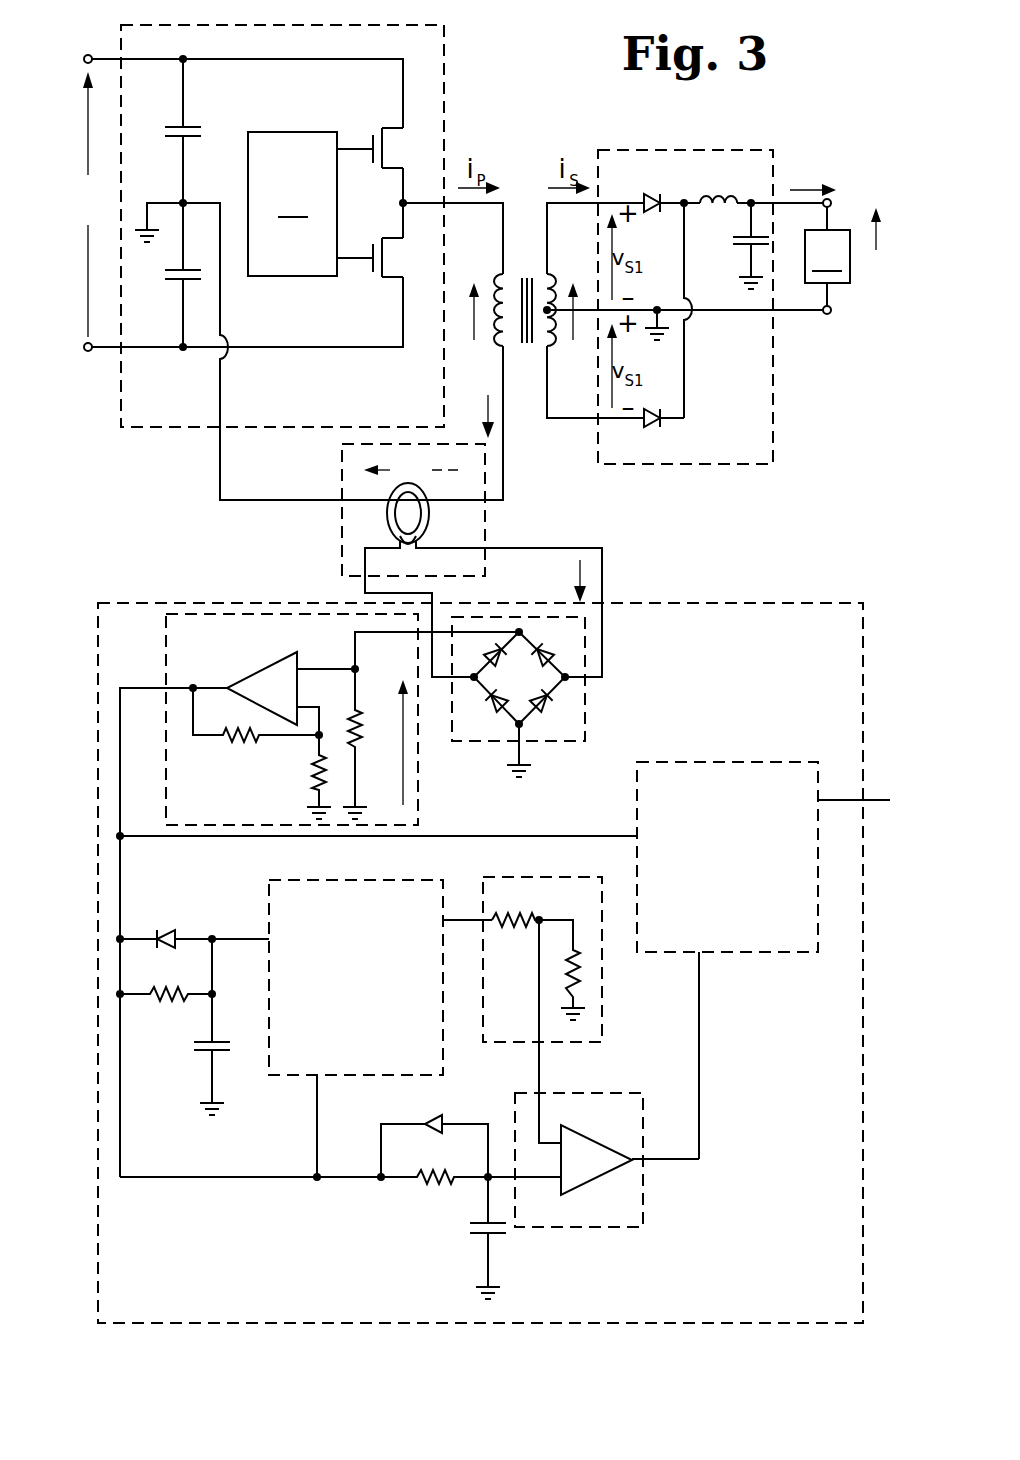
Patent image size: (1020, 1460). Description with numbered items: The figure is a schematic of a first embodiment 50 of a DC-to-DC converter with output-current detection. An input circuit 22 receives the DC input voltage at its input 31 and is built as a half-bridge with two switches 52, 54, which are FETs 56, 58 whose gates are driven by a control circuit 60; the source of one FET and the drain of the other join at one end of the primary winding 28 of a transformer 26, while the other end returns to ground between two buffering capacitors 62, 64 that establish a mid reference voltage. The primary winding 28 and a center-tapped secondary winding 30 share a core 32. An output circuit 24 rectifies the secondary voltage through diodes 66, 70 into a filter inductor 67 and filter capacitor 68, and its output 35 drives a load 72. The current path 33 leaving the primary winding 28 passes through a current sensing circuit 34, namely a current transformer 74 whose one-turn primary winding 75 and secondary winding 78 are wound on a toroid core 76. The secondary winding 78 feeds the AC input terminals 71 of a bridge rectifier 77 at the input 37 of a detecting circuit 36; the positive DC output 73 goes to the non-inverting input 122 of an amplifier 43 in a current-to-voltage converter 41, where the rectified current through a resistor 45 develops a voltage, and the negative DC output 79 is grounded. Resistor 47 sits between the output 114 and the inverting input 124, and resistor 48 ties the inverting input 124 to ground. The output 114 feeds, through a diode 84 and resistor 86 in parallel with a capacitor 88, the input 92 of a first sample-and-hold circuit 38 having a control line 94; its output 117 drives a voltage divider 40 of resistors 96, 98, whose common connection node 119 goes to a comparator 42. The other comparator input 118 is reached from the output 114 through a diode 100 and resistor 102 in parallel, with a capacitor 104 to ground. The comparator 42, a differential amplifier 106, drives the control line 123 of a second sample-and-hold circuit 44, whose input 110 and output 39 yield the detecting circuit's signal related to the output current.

The input circuit 22 is at (455, 78).
The output circuit 24 is at (658, 140).
The transformer 26 is at (522, 240).
The primary winding 28 is at (500, 272).
The secondary winding 30 is at (548, 272).
The input 31 is at (70, 78).
The core 32 is at (522, 348).
The current path 33 is at (505, 456).
The current sensing circuit 34 is at (330, 532).
The output 35 is at (840, 210).
The detecting circuit 36 is at (718, 588).
The input 37 is at (612, 592).
The first sample-and-hold circuit 38 is at (305, 872).
The output 39 is at (886, 798).
The voltage divider 40 is at (548, 872).
The current-to-voltage converter 41 is at (155, 640).
The comparator 42 is at (657, 1224).
The amplifier 43 is at (247, 672).
The second sample-and-hold circuit 44 is at (727, 748).
The resistor 45 is at (360, 712).
The resistor 47 is at (226, 738).
The resistor 48 is at (314, 778).
The first embodiment 50 is at (822, 105).
The switch 52 is at (390, 105).
The switch 54 is at (390, 292).
The FET 56 is at (370, 160).
The FET 58 is at (370, 267).
The control circuit 60 is at (292, 204).
The buffering capacitor 62 is at (198, 127).
The buffering capacitor 64 is at (172, 281).
The diode 66 is at (652, 198).
The filter inductor 67 is at (718, 197).
The filter capacitor 68 is at (748, 240).
The diode 70 is at (655, 430).
The AC input terminals 71 is at (596, 690).
The load 72 is at (827, 256).
The positive DC output 73 is at (490, 630).
The current transformer 74 is at (470, 512).
The primary winding 75 is at (403, 510).
The toroid core 76 is at (392, 496).
The bridge rectifier 77 is at (592, 733).
The secondary winding 78 is at (425, 545).
The negative DC output 79 is at (510, 752).
The diode 84 is at (168, 930).
The resistor 86 is at (168, 1000).
The capacitor 88 is at (205, 1052).
The input 92 is at (243, 944).
The control line 94 is at (315, 1130).
The resistor 96 is at (512, 930).
The resistor 98 is at (575, 952).
The diode 100 is at (438, 1112).
The resistor 102 is at (440, 1186).
The capacitor 104 is at (480, 1240).
The differential amplifier 106 is at (605, 1182).
The input 110 is at (604, 834).
The output 114 is at (143, 688).
The output 117 is at (465, 918).
The input 118 is at (500, 1172).
The common connection node 119 is at (541, 1068).
The non-inverting input 122 is at (320, 665).
The control line 123 is at (702, 1042).
The inverting input 124 is at (320, 733).